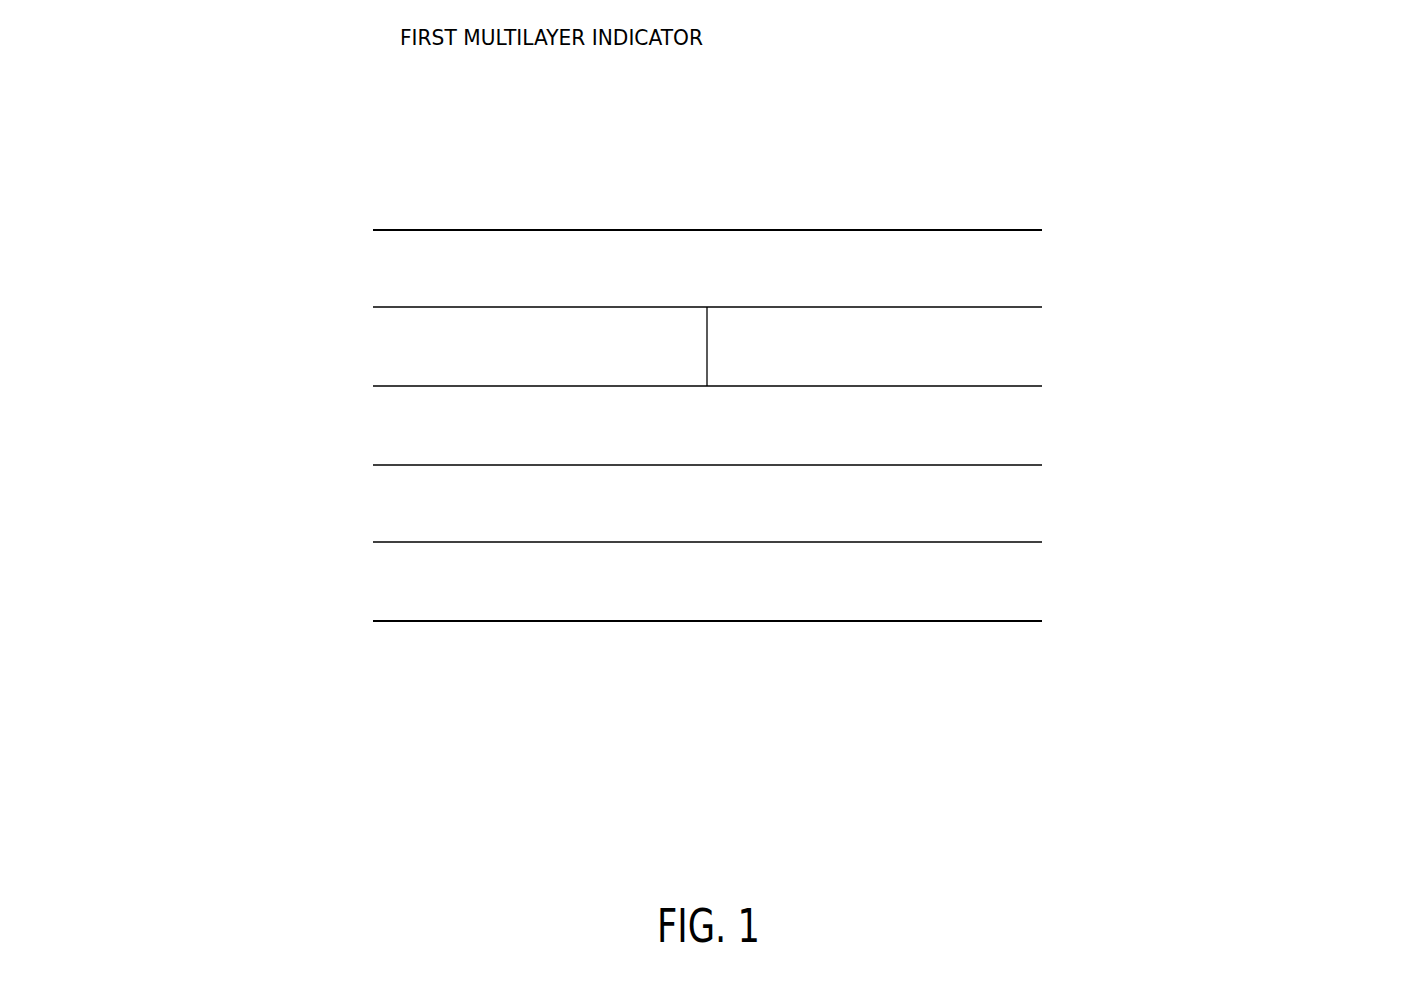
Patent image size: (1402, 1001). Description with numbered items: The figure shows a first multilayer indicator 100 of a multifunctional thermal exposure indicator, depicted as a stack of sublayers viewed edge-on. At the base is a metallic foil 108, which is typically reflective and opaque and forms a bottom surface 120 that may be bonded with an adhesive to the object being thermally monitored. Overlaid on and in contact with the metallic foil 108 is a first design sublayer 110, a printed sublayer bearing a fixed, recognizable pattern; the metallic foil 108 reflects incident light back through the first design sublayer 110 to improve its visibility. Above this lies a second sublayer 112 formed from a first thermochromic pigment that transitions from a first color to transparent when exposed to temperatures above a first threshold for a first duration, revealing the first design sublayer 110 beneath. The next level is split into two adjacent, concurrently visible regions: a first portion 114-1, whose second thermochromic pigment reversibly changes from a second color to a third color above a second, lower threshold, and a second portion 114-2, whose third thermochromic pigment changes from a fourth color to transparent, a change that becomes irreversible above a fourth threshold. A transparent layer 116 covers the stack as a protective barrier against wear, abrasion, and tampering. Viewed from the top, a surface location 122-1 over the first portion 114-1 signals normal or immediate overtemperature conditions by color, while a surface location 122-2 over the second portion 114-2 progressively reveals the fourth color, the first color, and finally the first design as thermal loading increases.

The first multilayer indicator 100 is at (213, 53).
The metallic foil 108 is at (723, 593).
The first design sublayer 110 is at (723, 513).
The second sublayer 112 is at (723, 436).
The first portion 114-1 is at (565, 356).
The second portion 114-2 is at (900, 356).
The transparent layer 116 is at (723, 280).
The bottom surface 120 is at (702, 624).
The surface location 122-1 is at (540, 228).
The surface location 122-2 is at (883, 228).